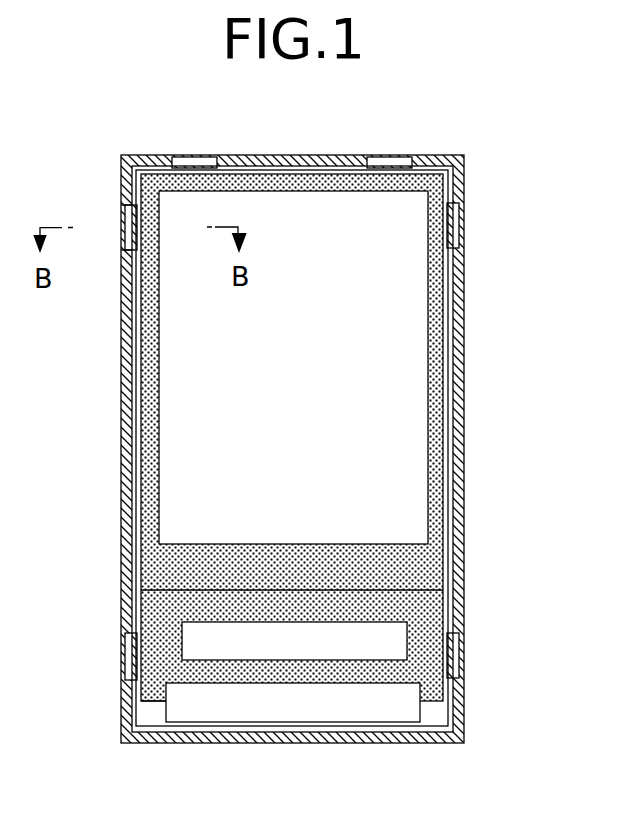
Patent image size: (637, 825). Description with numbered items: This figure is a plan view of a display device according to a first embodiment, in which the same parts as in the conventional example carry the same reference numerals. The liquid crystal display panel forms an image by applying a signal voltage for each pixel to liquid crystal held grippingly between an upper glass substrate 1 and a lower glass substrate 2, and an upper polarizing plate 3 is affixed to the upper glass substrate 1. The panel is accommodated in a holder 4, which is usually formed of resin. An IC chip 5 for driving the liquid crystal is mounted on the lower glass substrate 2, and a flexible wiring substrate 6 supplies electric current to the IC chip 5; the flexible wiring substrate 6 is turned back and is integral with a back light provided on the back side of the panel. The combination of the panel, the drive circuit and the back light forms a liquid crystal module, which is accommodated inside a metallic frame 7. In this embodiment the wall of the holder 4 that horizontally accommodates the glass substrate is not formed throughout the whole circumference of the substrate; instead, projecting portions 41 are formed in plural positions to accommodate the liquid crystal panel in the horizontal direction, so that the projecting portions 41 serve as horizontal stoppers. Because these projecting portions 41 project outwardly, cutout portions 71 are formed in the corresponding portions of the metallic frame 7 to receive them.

The upper glass substrate 1 is at (437, 381).
The lower glass substrate 2 is at (437, 601).
The upper polarizing plate 3 is at (413, 290).
The holder 4 is at (139, 700).
The IC chip 5 is at (395, 651).
The flexible wiring substrate 6 is at (415, 713).
The metallic frame 7 is at (121, 421).
The projecting portions 41 is at (134, 224).
The cutout portions 71 is at (122, 243).